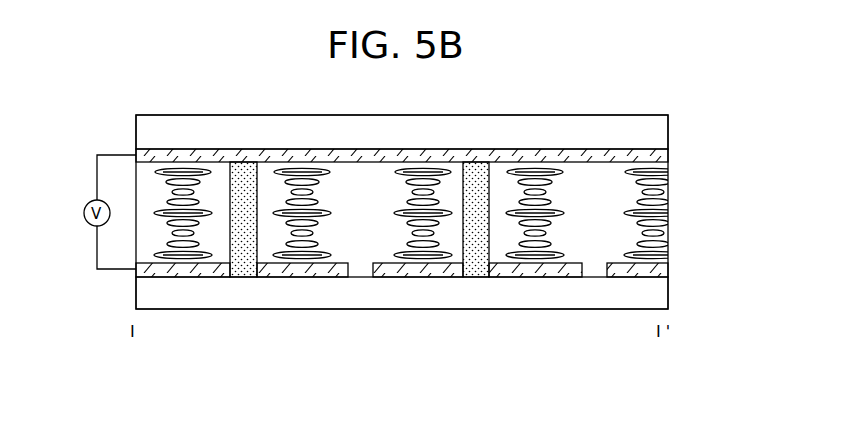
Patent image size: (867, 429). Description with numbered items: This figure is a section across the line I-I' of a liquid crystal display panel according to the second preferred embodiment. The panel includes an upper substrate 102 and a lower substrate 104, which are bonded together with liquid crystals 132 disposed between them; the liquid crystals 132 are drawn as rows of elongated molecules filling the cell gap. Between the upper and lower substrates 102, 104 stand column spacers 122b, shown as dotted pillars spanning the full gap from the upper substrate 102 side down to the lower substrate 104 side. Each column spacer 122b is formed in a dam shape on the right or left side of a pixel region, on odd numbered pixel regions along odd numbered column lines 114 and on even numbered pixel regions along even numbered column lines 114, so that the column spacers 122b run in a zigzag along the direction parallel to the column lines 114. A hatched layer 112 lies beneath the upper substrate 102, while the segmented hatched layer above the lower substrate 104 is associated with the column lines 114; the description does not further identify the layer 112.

The upper substrate 102 is at (660, 133).
The upper electrode 112 is at (660, 156).
The column lines 114 is at (660, 269).
The lower substrate 104 is at (660, 293).
The column spacer 122b is at (243, 277).
The liquid crystals 132 is at (155, 213).